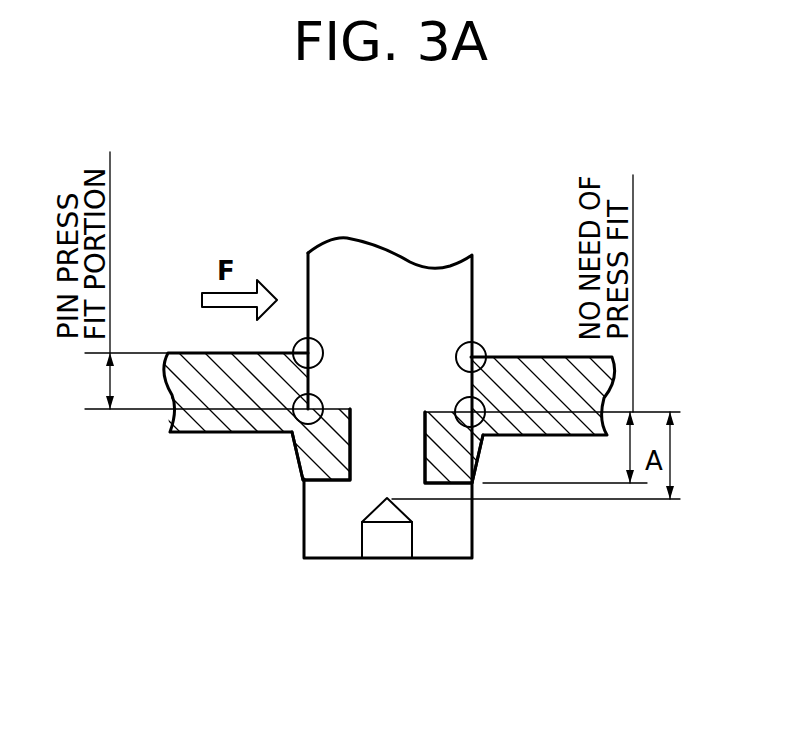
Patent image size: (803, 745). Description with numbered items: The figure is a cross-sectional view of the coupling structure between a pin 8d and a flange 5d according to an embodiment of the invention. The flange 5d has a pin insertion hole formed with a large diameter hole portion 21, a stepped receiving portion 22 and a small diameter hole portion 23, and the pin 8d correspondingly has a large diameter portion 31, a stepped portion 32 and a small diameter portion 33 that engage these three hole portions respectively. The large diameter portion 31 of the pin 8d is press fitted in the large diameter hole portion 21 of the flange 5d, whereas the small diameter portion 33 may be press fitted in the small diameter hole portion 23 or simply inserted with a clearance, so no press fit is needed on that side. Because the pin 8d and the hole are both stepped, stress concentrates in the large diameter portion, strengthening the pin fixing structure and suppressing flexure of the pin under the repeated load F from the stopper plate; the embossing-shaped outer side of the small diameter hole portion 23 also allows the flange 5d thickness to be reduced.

The flange 5d is at (190, 444).
The pin 8d is at (432, 254).
The large diameter hole portion 21 is at (308, 380).
The stepped receiving portion 22 is at (338, 410).
The small diameter hole portion 23 is at (350, 436).
The large diameter portion 31 is at (476, 388).
The stepped portion 32 is at (456, 428).
The small diameter portion 33 is at (473, 485).